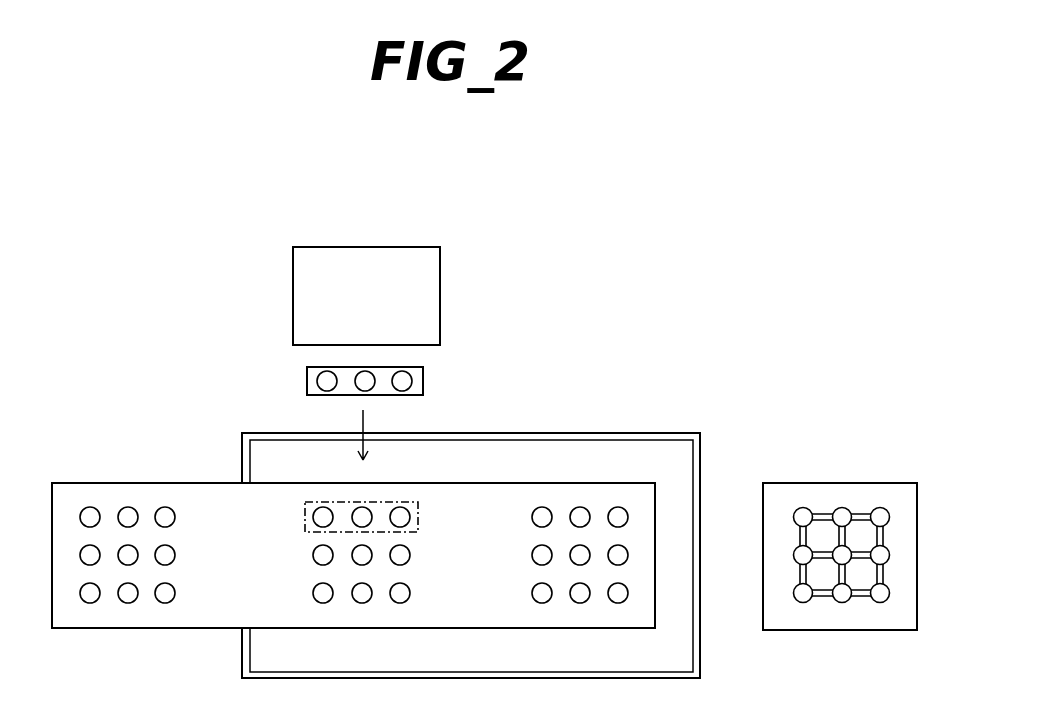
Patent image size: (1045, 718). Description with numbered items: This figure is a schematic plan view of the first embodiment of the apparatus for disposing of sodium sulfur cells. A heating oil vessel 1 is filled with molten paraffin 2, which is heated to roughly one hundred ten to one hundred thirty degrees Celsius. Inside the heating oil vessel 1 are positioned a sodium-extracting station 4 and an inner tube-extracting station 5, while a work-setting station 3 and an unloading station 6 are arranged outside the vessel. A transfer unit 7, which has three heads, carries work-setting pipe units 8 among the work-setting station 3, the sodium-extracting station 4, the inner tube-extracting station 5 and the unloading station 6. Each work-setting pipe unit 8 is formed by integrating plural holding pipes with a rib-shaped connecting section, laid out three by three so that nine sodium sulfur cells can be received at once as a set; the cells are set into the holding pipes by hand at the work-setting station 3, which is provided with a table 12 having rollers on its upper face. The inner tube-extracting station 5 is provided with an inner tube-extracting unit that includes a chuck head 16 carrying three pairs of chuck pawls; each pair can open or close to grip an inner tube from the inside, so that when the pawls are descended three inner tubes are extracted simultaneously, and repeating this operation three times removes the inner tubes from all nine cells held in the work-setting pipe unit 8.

The heating oil vessel 1 is at (667, 432).
The molten paraffin 2 is at (678, 467).
The work-setting station 3 is at (848, 477).
The sodium-extracting station 4 is at (588, 474).
The inner tube-extracting station 5 is at (380, 491).
The unloading station 6 is at (135, 496).
The transfer unit 7 is at (353, 497).
The work-setting pipe unit 8 is at (820, 510).
The table 12 is at (855, 516).
The chuck head 16 is at (423, 380).